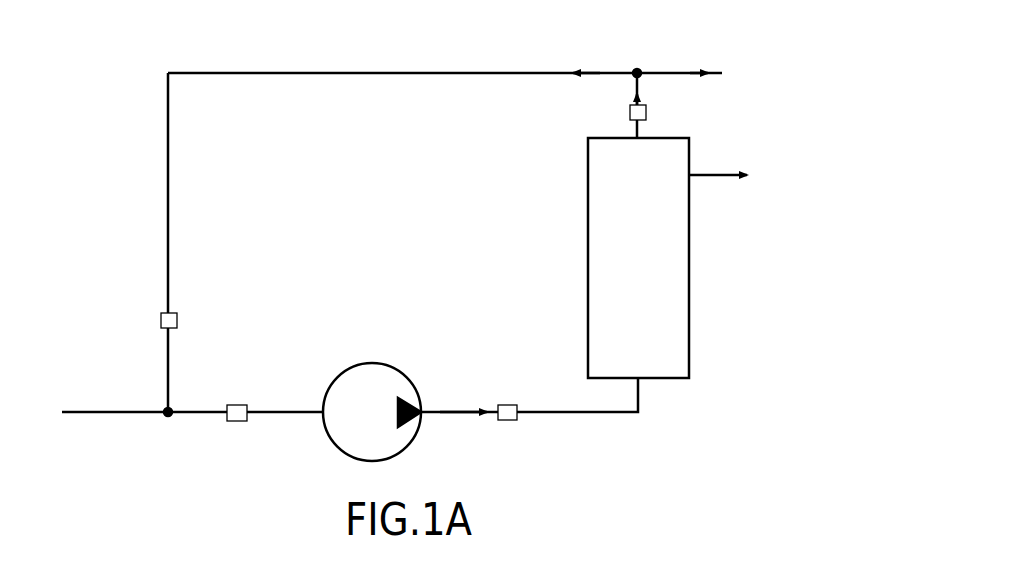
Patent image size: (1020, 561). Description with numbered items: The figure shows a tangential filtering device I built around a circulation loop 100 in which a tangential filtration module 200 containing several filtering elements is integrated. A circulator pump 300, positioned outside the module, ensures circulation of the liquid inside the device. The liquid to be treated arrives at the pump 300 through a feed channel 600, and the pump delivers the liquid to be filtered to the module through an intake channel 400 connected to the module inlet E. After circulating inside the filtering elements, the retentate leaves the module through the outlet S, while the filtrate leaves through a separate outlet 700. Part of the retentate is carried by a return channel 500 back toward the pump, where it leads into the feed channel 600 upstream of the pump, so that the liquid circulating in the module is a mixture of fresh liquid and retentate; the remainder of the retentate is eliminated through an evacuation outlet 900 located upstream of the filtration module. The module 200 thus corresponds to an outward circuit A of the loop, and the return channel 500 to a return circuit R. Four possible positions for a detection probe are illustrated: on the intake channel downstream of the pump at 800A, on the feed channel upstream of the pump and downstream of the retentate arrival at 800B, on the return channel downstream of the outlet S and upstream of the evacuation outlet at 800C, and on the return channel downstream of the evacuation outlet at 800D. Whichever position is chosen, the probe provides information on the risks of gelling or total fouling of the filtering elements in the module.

The circulation loop 100 is at (212, 246).
The tangential filtration module 200 is at (657, 273).
The circulator pump 300 is at (375, 364).
The intake channel 400 is at (567, 414).
The return channel 500 is at (388, 72).
The feed channel 600 is at (97, 411).
The outlet for the filtrate 700 is at (693, 178).
The probe 800A is at (509, 404).
The probe 800B is at (237, 404).
The probe 800C is at (629, 113).
The probe 800D is at (178, 317).
The evacuation outlet 900 is at (683, 72).
The outward circuit A is at (720, 265).
The inlet E is at (641, 380).
The outlet S is at (640, 134).
The filtering device I is at (117, 114).
The return circuit R is at (142, 208).